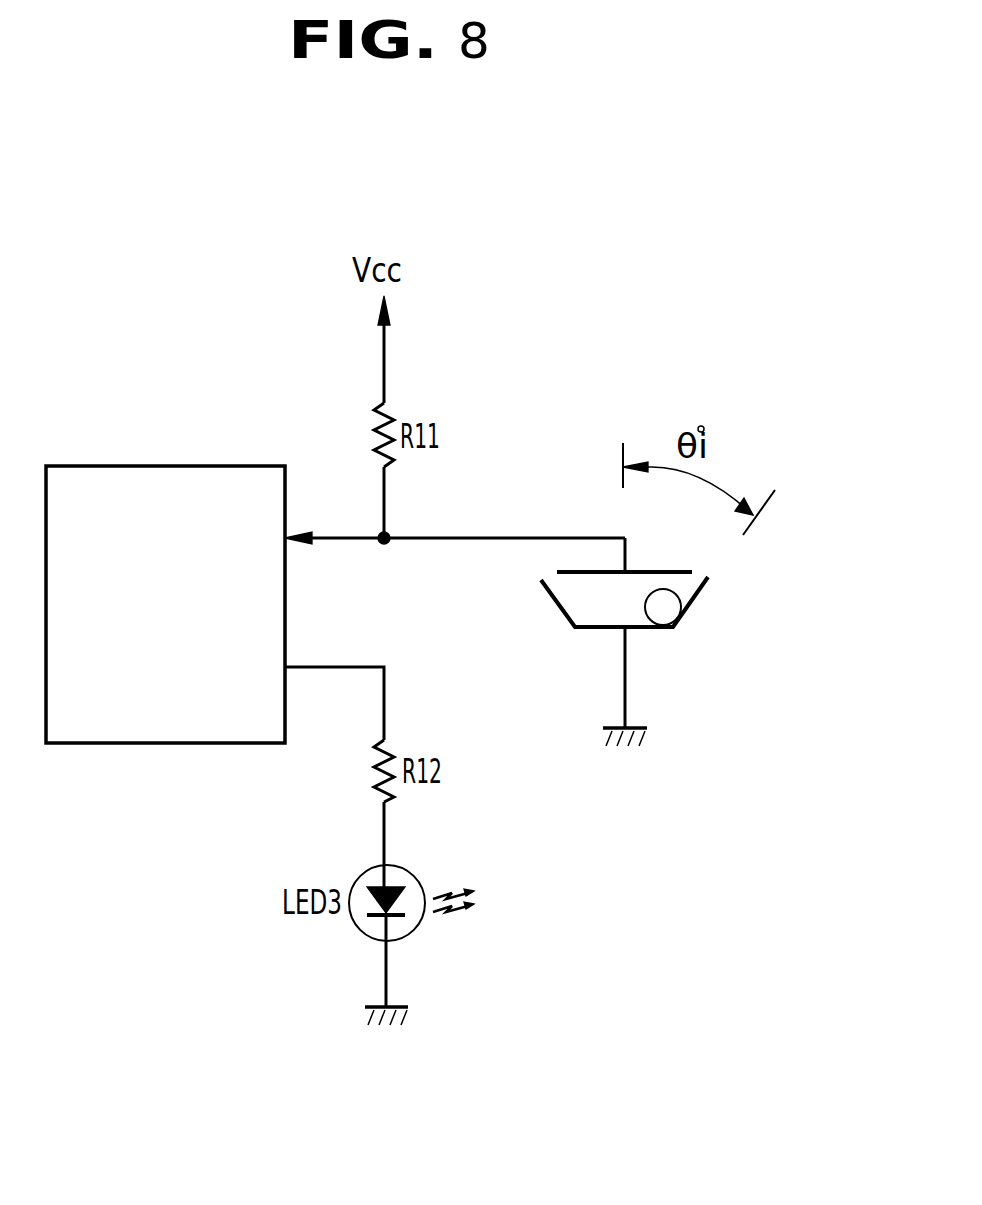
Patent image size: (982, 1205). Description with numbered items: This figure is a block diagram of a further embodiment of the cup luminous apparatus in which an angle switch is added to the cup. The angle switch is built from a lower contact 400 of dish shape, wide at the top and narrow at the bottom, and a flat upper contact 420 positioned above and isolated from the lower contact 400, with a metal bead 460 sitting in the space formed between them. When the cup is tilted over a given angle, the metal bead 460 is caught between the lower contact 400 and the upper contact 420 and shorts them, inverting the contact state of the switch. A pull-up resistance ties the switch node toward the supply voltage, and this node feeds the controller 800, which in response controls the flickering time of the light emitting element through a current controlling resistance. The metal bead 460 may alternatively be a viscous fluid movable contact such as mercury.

The controller 800 is at (161, 466).
The lower contact 400 is at (562, 615).
The upper contact 420 is at (686, 569).
The metal bead 460 is at (676, 599).